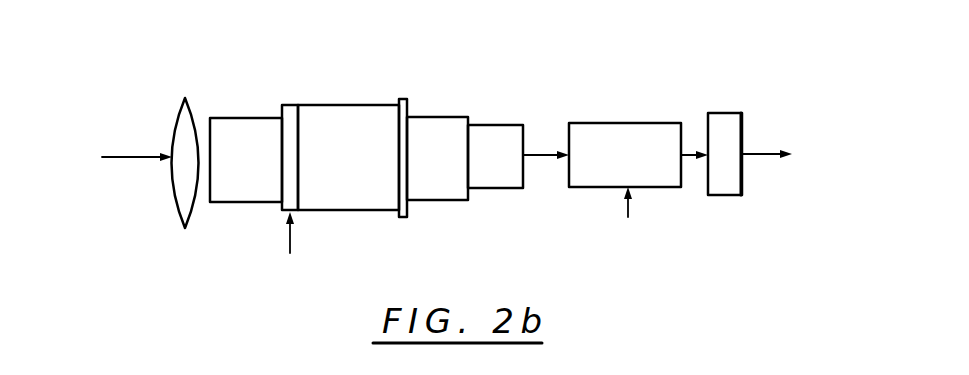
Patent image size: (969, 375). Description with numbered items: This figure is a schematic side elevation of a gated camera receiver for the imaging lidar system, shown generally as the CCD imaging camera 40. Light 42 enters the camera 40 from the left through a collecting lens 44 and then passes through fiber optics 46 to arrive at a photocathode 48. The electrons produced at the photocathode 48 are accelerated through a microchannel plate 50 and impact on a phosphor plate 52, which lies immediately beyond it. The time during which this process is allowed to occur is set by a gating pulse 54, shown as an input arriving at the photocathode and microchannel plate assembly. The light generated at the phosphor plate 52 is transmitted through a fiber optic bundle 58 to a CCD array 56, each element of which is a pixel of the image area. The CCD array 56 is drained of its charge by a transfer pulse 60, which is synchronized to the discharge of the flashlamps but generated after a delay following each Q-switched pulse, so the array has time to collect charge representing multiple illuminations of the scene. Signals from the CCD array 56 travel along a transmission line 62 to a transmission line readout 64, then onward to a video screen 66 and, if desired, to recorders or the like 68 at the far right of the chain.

The CCD imaging camera 40 is at (503, 108).
The light 42 is at (117, 157).
The collecting lens 44 is at (175, 128).
The fiber optics 46 is at (258, 167).
The photocathode 48 is at (292, 105).
The microchannel plate 50 is at (362, 165).
The phosphor plate 52 is at (403, 100).
The gating pulse 54 is at (288, 246).
The CCD array 56 is at (511, 165).
The fiber optic bundle 58 is at (452, 165).
The transfer pulse 60 is at (622, 215).
The transmission line 62 is at (543, 157).
The transmission line readout 64 is at (645, 165).
The video screen 66 is at (738, 197).
The recorders 68 is at (782, 158).